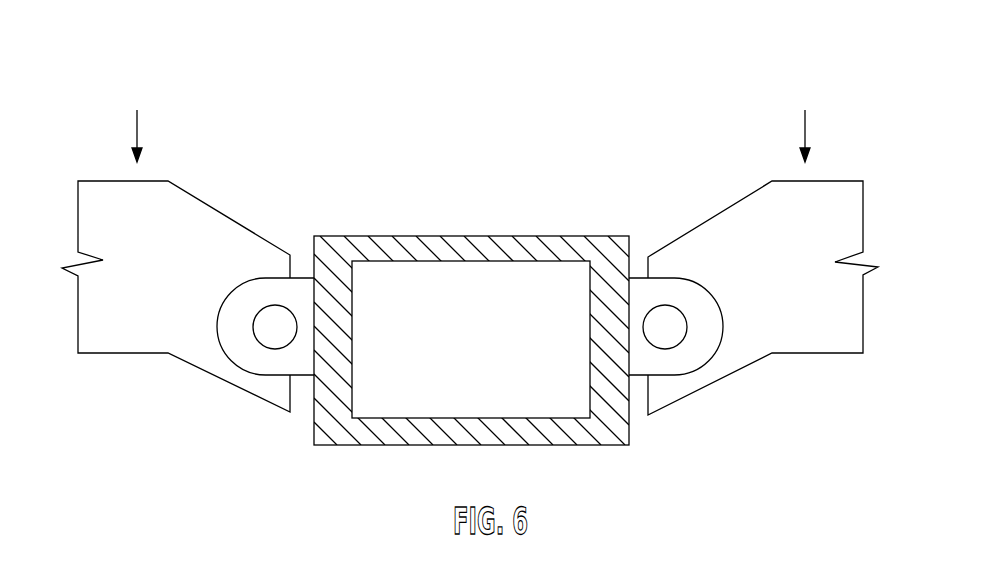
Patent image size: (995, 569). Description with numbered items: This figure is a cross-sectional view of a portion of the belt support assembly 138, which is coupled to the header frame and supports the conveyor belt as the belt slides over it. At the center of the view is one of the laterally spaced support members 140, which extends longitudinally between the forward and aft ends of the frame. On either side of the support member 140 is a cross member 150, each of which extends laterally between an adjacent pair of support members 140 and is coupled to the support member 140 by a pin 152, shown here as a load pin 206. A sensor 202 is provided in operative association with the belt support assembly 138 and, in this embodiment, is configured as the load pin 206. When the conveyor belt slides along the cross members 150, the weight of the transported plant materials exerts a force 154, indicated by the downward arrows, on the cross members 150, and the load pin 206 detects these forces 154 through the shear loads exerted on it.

The belt support assembly 138 is at (125, 31).
The support member 140 is at (447, 236).
The cross member 150 is at (107, 181).
The pin 152 is at (283, 333).
The force 154 is at (139, 128).
The sensor 202 is at (280, 303).
The load pin 206 is at (267, 333).